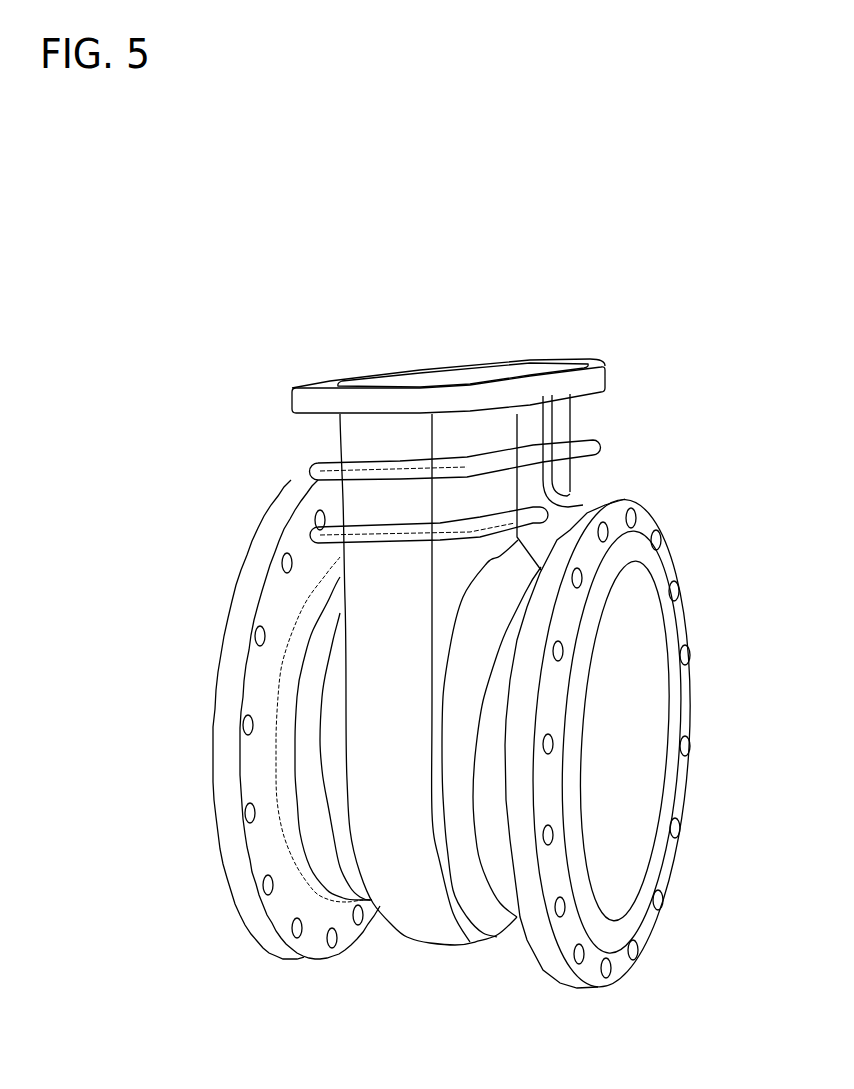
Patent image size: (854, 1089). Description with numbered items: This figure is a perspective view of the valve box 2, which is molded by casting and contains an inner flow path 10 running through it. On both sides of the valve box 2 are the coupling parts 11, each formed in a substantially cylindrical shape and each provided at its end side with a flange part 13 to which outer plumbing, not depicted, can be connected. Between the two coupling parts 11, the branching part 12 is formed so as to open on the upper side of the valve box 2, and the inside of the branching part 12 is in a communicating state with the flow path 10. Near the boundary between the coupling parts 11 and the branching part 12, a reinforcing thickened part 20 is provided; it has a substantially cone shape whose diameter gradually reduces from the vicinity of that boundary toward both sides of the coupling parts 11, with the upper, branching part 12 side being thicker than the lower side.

The valve box 2 is at (455, 690).
The flow path 10 is at (627, 787).
The coupling part 11 is at (493, 710).
The branching part 12 is at (503, 432).
The flange part 13 is at (623, 513).
The thickened part 20 is at (492, 608).